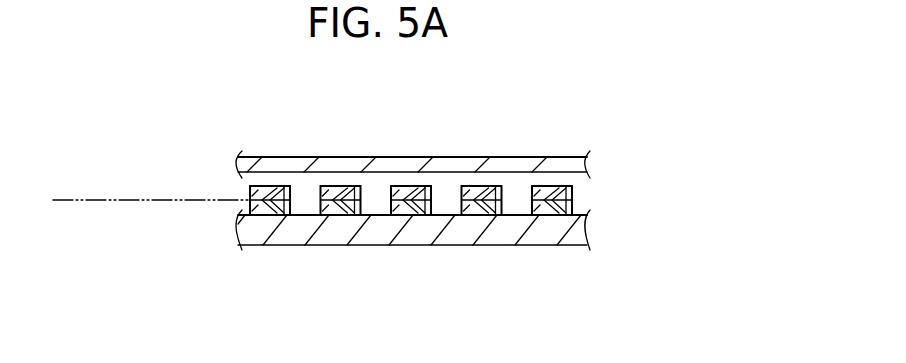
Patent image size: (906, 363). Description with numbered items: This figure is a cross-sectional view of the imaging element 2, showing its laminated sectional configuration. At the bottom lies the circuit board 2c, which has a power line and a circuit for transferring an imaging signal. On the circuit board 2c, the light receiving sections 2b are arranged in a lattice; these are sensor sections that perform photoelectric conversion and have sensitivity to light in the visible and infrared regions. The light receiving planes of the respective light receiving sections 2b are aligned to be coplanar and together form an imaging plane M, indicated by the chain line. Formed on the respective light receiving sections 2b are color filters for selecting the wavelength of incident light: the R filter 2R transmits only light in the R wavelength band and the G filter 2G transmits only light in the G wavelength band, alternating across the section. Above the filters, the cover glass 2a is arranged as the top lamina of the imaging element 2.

The imaging element 2 is at (695, 108).
The cover glass 2a is at (568, 155).
The light receiving section 2b is at (551, 209).
The circuit board 2c is at (447, 237).
The G filter 2G is at (271, 185).
The R filter 2R is at (340, 185).
The imaging plane M is at (125, 198).